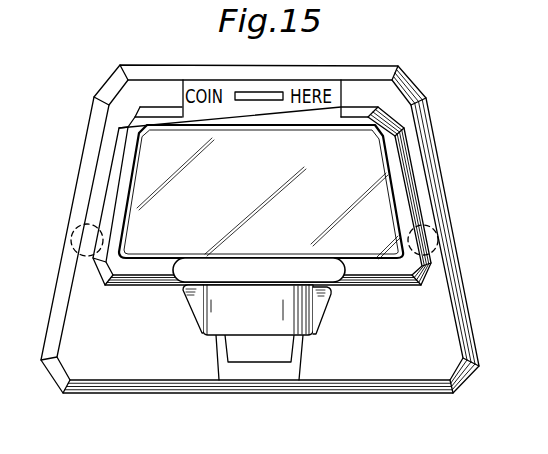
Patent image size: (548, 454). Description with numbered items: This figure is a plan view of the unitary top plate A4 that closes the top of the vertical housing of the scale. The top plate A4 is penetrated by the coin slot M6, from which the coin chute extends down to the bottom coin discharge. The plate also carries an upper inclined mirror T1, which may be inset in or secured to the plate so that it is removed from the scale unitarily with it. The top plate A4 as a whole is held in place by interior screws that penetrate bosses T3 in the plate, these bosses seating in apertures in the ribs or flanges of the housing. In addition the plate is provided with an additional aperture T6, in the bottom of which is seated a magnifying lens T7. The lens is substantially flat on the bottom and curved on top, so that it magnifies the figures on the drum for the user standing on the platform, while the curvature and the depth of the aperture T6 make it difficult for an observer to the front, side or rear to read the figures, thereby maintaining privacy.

The top plate A4 is at (369, 88).
The coin slot M6 is at (271, 92).
The upper inclined mirror T1 is at (369, 163).
The bosses T3 is at (493, 231).
The magnifying lens T7 is at (263, 324).
The additional aperture T6 is at (322, 305).